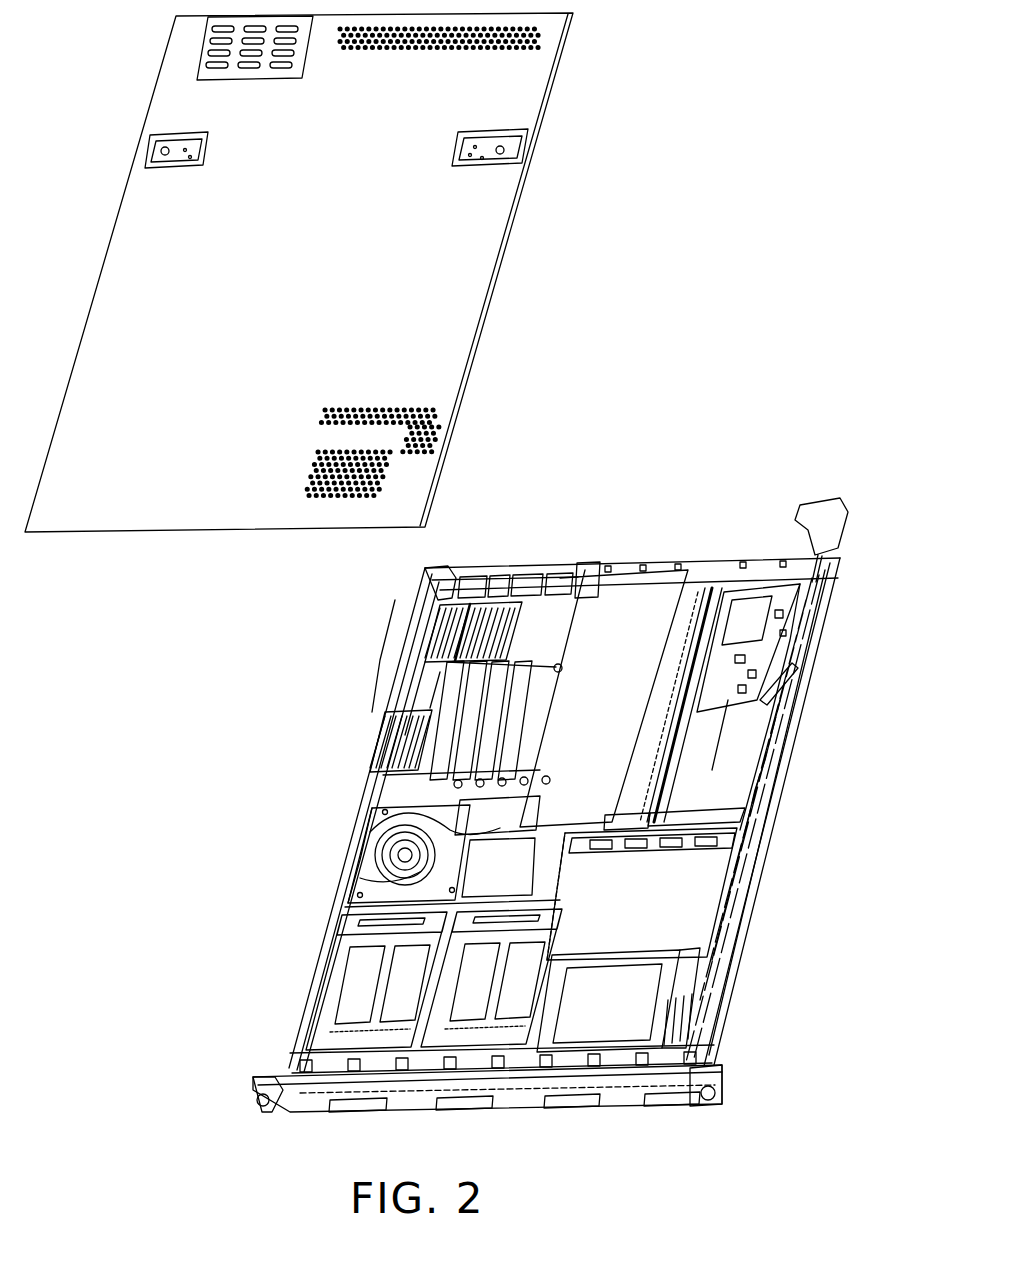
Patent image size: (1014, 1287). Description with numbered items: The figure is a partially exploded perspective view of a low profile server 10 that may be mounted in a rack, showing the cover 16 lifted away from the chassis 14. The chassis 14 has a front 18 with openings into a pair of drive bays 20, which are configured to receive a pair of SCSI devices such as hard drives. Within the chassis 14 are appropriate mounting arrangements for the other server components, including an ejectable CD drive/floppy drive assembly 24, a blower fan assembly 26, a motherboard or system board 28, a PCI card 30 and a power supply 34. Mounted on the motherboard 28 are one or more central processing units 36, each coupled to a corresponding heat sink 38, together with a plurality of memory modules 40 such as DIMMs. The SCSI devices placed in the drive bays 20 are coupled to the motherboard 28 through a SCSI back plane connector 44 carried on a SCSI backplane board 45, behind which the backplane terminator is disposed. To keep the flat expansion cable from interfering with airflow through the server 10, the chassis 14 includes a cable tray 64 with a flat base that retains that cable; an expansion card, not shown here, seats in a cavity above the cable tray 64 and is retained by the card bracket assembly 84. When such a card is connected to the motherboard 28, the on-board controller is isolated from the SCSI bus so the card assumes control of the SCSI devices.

The server 10 is at (680, 87).
The chassis 14 is at (706, 1056).
The cover 16 is at (78, 349).
The front 18 is at (292, 1112).
The drive bays 20 is at (478, 1023).
The ejectable CD drive/floppy drive assembly 24 is at (706, 1048).
The blower fan assembly 26 is at (373, 862).
The motherboard or system board 28 is at (437, 682).
The PCI card 30 is at (622, 590).
The power supply 34 is at (710, 888).
The central processing unit 36 is at (425, 652).
The heat sink 38 is at (470, 600).
The memory modules 40 is at (448, 688).
The SCSI back plane connector 44 is at (528, 893).
The SCSI backplane board 45 is at (335, 905).
The cable tray 64 is at (768, 717).
The card bracket assembly 84 is at (692, 578).